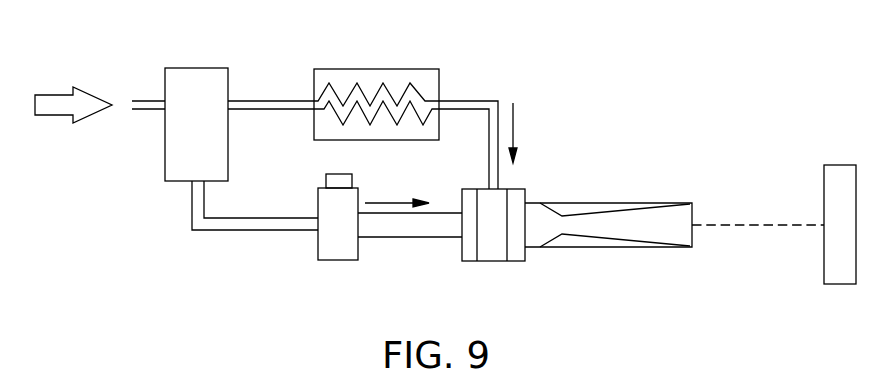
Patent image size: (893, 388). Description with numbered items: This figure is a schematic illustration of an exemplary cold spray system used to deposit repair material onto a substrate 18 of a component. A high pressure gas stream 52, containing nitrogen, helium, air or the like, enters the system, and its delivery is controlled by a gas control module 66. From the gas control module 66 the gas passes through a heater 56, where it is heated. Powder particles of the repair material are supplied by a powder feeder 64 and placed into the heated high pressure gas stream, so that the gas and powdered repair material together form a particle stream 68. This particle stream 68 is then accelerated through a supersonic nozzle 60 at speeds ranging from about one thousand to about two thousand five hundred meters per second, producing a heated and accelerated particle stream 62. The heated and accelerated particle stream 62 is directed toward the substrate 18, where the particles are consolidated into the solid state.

The substrate 18 is at (842, 165).
The high pressure gas stream 52 is at (55, 95).
The heater 56 is at (368, 69).
The supersonic nozzle 60 is at (499, 262).
The heated and accelerated particle stream 62 is at (742, 226).
The powder feeder 64 is at (337, 261).
The gas control module 66 is at (195, 68).
The particle stream 68 is at (390, 202).